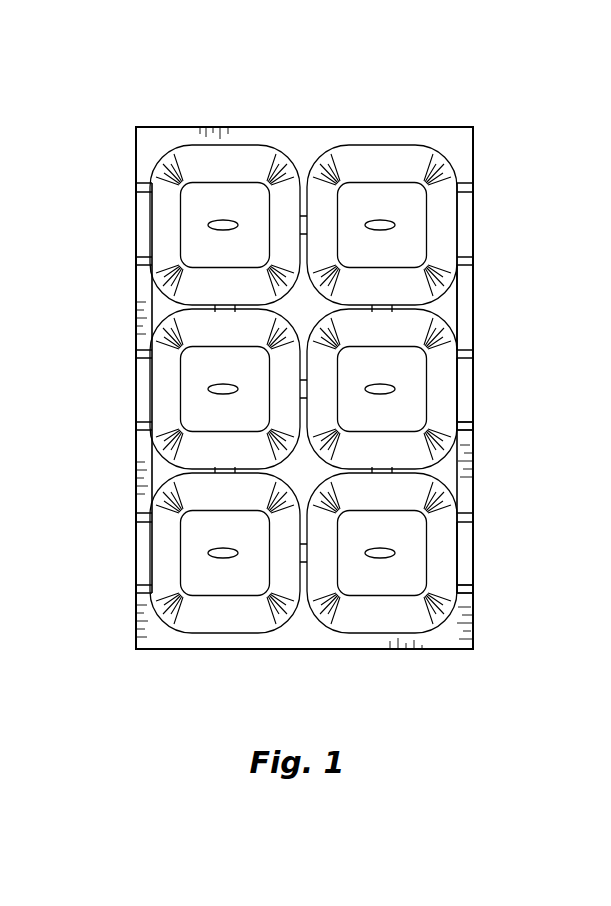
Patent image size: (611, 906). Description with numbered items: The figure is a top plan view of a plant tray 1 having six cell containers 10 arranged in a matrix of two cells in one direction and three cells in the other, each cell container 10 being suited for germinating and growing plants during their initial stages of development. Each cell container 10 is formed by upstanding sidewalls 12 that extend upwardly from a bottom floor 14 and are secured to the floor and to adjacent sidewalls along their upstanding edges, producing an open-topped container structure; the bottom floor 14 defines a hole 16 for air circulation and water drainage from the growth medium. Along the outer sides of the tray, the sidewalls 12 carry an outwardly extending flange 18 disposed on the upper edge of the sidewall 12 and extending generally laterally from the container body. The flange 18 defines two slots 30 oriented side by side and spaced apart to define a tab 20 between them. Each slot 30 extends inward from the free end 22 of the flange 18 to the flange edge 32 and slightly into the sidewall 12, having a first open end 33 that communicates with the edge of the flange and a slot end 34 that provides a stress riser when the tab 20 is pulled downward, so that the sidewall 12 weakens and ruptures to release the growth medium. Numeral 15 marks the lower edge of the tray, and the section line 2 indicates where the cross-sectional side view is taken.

The plant tray 1 is at (493, 100).
The cell container 10 is at (354, 337).
The sidewall 12 is at (445, 203).
The bottom floor 14 is at (415, 227).
The hole 16 is at (380, 229).
The flange 18 is at (467, 287).
The tab 20 is at (467, 367).
The free end 22 is at (473, 385).
The first open end 33 is at (473, 423).
The flange edge 32 is at (460, 545).
The slot 30 is at (472, 588).
The slot end 34 is at (460, 603).
The bottom edge 15 is at (328, 652).
The section line 2- 2 is at (136, 518).